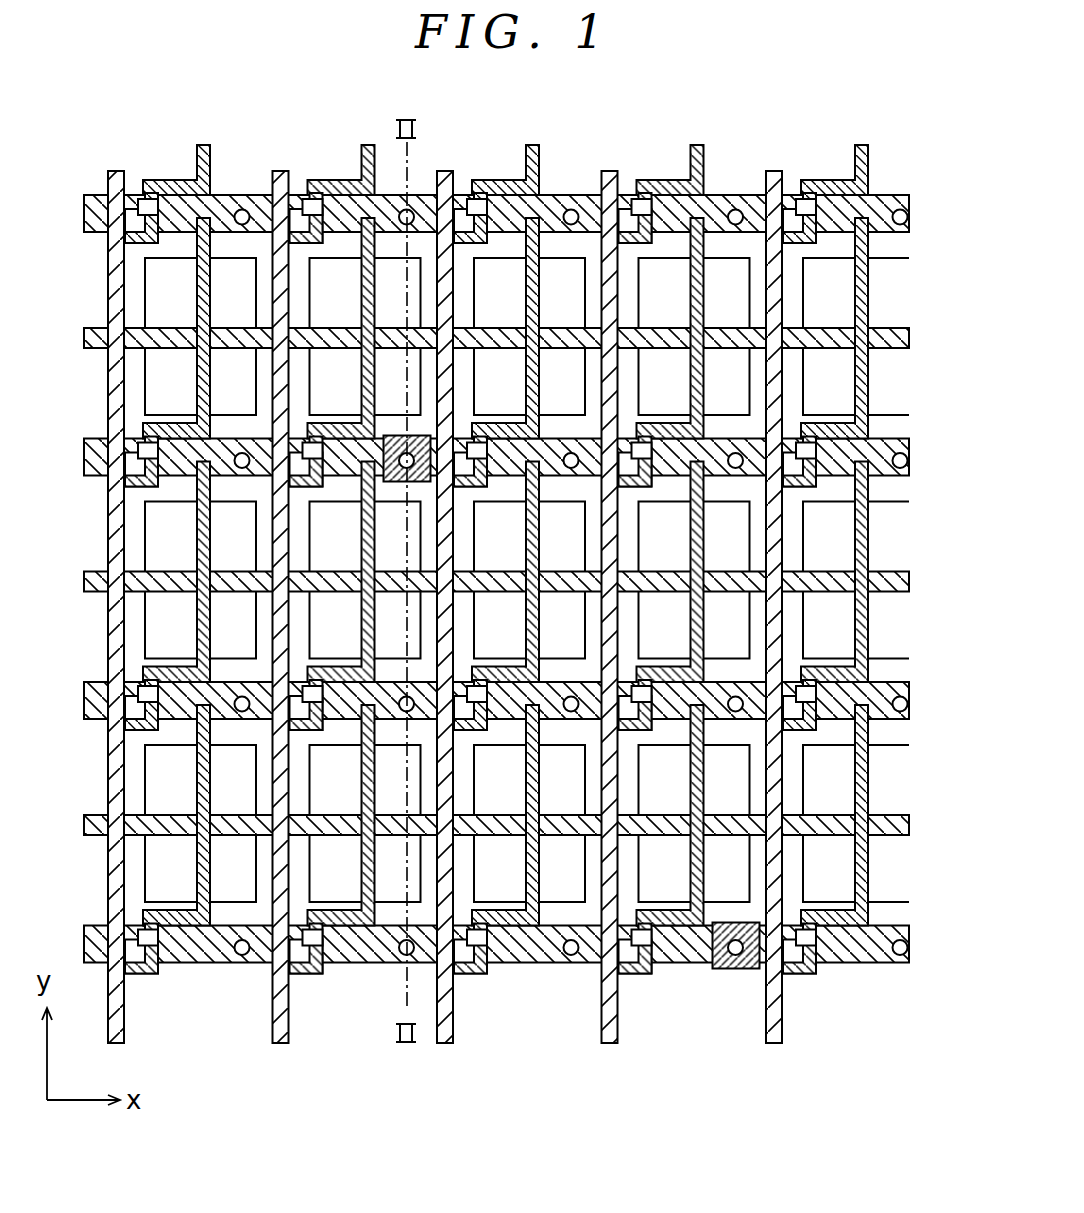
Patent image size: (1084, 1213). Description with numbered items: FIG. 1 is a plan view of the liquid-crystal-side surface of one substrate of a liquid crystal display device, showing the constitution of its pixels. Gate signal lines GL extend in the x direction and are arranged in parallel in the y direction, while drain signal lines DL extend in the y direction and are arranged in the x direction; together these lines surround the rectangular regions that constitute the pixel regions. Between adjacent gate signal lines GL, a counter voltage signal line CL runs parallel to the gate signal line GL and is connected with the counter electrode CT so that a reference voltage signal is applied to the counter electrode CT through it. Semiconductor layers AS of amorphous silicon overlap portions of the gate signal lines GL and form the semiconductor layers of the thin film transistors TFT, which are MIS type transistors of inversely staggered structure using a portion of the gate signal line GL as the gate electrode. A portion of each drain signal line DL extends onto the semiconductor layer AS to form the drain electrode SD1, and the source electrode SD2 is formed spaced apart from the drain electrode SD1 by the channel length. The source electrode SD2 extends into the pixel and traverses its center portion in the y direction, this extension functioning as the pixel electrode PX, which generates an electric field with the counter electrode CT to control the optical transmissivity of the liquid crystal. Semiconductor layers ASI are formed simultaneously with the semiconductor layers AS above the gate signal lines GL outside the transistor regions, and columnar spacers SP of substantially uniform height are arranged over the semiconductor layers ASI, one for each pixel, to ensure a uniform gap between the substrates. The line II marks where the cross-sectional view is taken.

The gate signal line GL is at (523, 581).
The counter voltage signal line CL is at (522, 588).
The drain signal line DL is at (445, 626).
The pixel electrode PX is at (688, 873).
The counter electrode CT is at (735, 922).
The semiconductor layer ASI is at (424, 440).
The spacer SP is at (415, 482).
The semiconductor layer AS is at (355, 945).
The drain electrode SD1 is at (475, 968).
The source electrode SD2 is at (518, 952).
The thin film transistor TFT is at (470, 618).
The line II- II is at (406, 581).